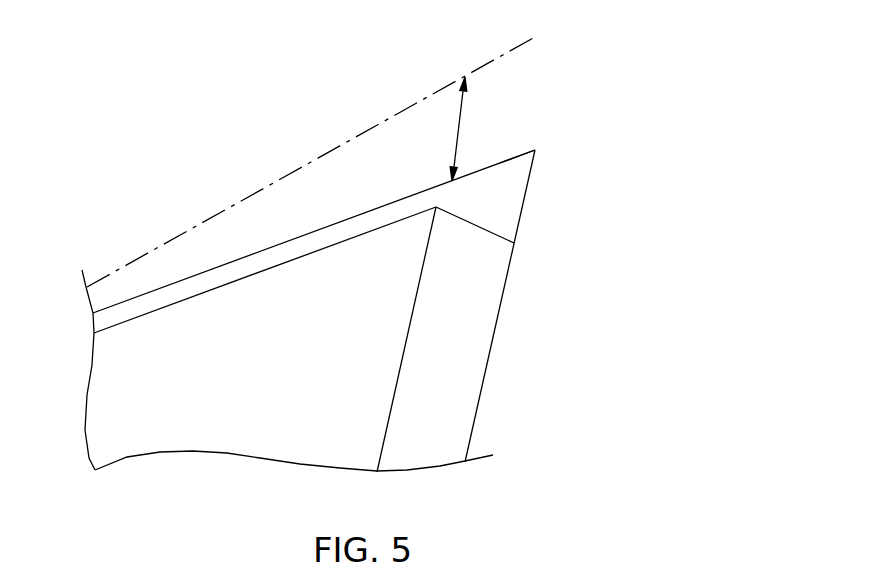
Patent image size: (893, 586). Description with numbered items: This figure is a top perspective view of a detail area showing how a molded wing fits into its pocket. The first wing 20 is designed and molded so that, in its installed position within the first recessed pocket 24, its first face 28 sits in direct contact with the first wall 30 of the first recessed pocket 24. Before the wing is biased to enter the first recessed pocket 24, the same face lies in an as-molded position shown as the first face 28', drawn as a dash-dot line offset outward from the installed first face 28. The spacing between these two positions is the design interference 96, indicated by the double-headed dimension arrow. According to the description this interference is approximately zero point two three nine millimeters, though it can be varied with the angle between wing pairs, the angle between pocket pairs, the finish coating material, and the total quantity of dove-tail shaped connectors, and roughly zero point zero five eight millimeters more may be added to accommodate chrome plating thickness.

The first wing 20 is at (377, 380).
The first recessed pocket 24 is at (483, 210).
The first face 28 is at (265, 249).
The first face (as-molded position) 28' is at (311, 162).
The first wall 30 is at (515, 176).
The design interference 96 is at (457, 128).